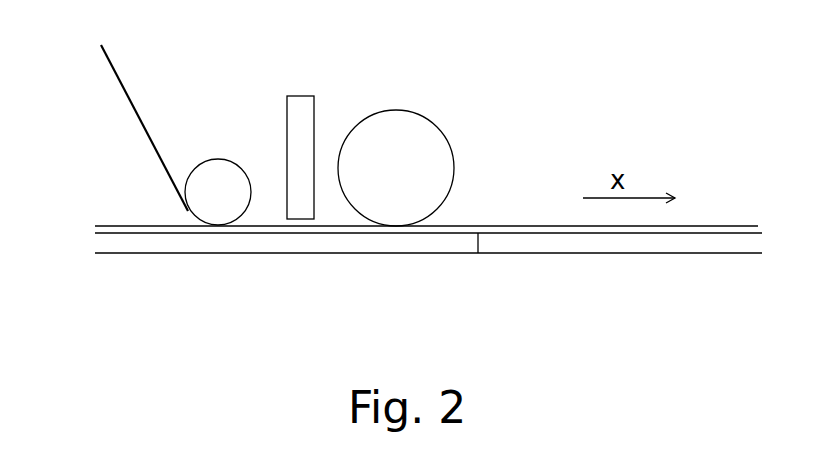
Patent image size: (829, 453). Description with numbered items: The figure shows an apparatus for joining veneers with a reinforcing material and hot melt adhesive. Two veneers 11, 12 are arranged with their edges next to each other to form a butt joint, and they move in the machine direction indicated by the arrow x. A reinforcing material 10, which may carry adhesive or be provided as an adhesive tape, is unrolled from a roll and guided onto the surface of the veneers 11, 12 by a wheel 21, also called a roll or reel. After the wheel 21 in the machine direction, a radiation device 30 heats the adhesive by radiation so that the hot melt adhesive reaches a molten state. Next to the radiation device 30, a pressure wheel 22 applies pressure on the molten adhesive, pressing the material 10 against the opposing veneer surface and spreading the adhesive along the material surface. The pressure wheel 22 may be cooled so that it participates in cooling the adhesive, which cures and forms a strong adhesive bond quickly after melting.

The reinforcing material 10 is at (112, 72).
The wheel 21 is at (223, 170).
The radiation device 30 is at (302, 110).
The pressure wheel 22 is at (433, 143).
The veneer 11 is at (412, 242).
The veneer 12 is at (525, 243).